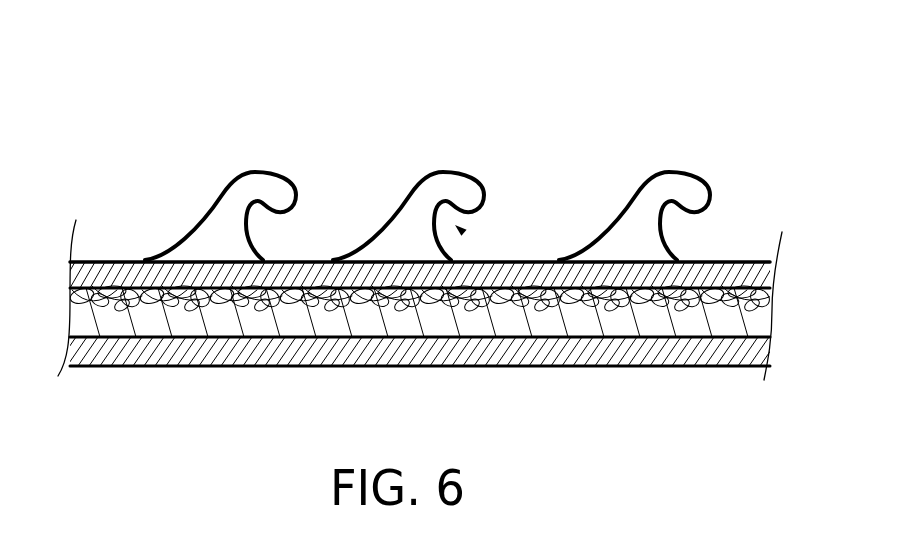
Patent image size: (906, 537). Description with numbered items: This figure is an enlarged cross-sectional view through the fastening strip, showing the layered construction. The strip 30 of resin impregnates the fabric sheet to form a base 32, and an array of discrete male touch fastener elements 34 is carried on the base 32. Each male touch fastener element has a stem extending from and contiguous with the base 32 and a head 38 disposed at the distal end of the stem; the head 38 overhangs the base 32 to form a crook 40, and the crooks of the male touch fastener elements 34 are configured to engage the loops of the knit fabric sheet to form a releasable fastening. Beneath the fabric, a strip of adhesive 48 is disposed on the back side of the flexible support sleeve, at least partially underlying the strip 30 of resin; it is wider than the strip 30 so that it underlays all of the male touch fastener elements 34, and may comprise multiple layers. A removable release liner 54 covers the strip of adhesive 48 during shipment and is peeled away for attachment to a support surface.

The strip of resin 30 is at (336, 108).
The base 32 is at (695, 258).
The male touch fastener elements 34 is at (243, 172).
The head 38 is at (257, 246).
The crook 40 is at (463, 231).
The strip of adhesive 48 is at (160, 332).
The removable release liner 54 is at (558, 367).